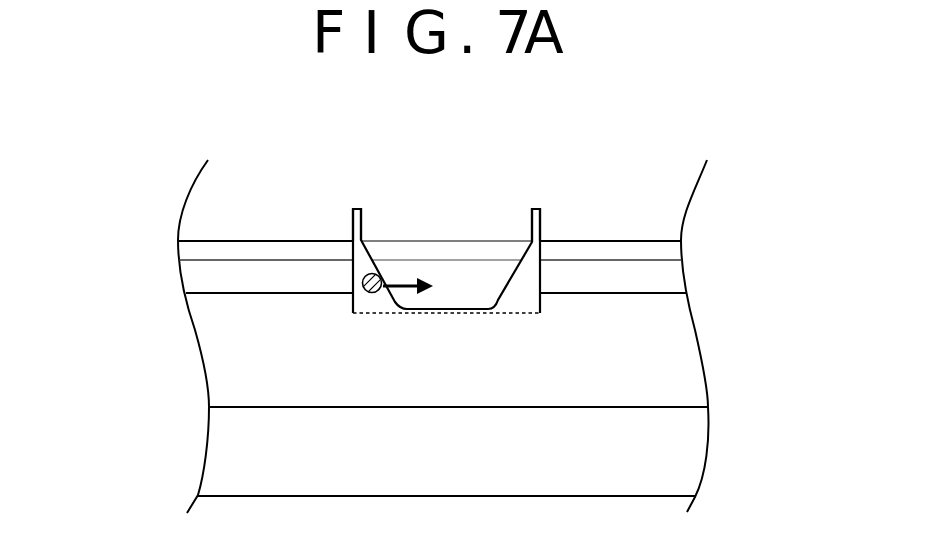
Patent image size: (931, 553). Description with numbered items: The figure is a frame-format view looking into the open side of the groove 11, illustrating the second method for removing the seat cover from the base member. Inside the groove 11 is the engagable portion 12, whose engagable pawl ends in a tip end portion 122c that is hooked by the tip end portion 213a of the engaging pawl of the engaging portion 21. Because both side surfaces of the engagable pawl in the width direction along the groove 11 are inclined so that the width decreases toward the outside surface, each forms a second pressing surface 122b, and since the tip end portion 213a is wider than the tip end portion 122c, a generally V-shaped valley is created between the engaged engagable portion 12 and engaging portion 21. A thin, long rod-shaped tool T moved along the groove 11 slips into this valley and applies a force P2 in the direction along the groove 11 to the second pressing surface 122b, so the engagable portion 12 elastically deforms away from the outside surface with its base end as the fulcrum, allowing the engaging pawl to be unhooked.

The groove 11 is at (212, 270).
The engagable portion 12 is at (523, 272).
The engaging portion 21 is at (266, 281).
The second pressing surface 122b is at (360, 250).
The tip end portion 122c is at (490, 299).
The tip end portion 213a is at (365, 307).
The rod-shaped tool T is at (378, 274).
The force P2 is at (408, 271).